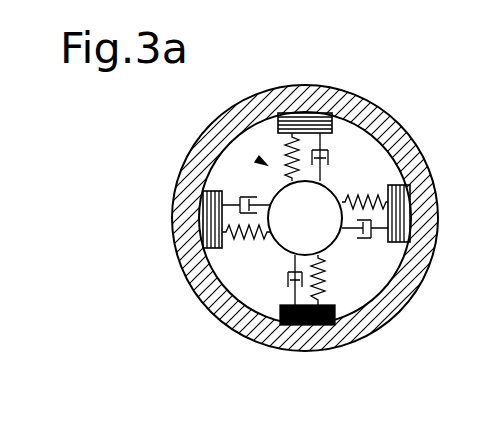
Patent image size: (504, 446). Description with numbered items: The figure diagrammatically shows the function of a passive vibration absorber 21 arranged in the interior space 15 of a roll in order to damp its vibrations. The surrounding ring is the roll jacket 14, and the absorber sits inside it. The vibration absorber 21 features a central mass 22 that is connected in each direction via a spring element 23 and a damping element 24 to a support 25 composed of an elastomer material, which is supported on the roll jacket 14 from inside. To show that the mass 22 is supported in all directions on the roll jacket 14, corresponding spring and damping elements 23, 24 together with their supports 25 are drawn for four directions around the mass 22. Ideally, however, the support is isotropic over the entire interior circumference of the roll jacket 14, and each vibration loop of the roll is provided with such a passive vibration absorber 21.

The roll jacket 14 is at (390, 133).
The interior space 15 is at (348, 142).
The passive vibration absorber 21 is at (260, 161).
The mass 22 is at (331, 236).
The spring element 23 is at (368, 196).
The damping element 24 is at (408, 219).
The support 25 is at (410, 212).